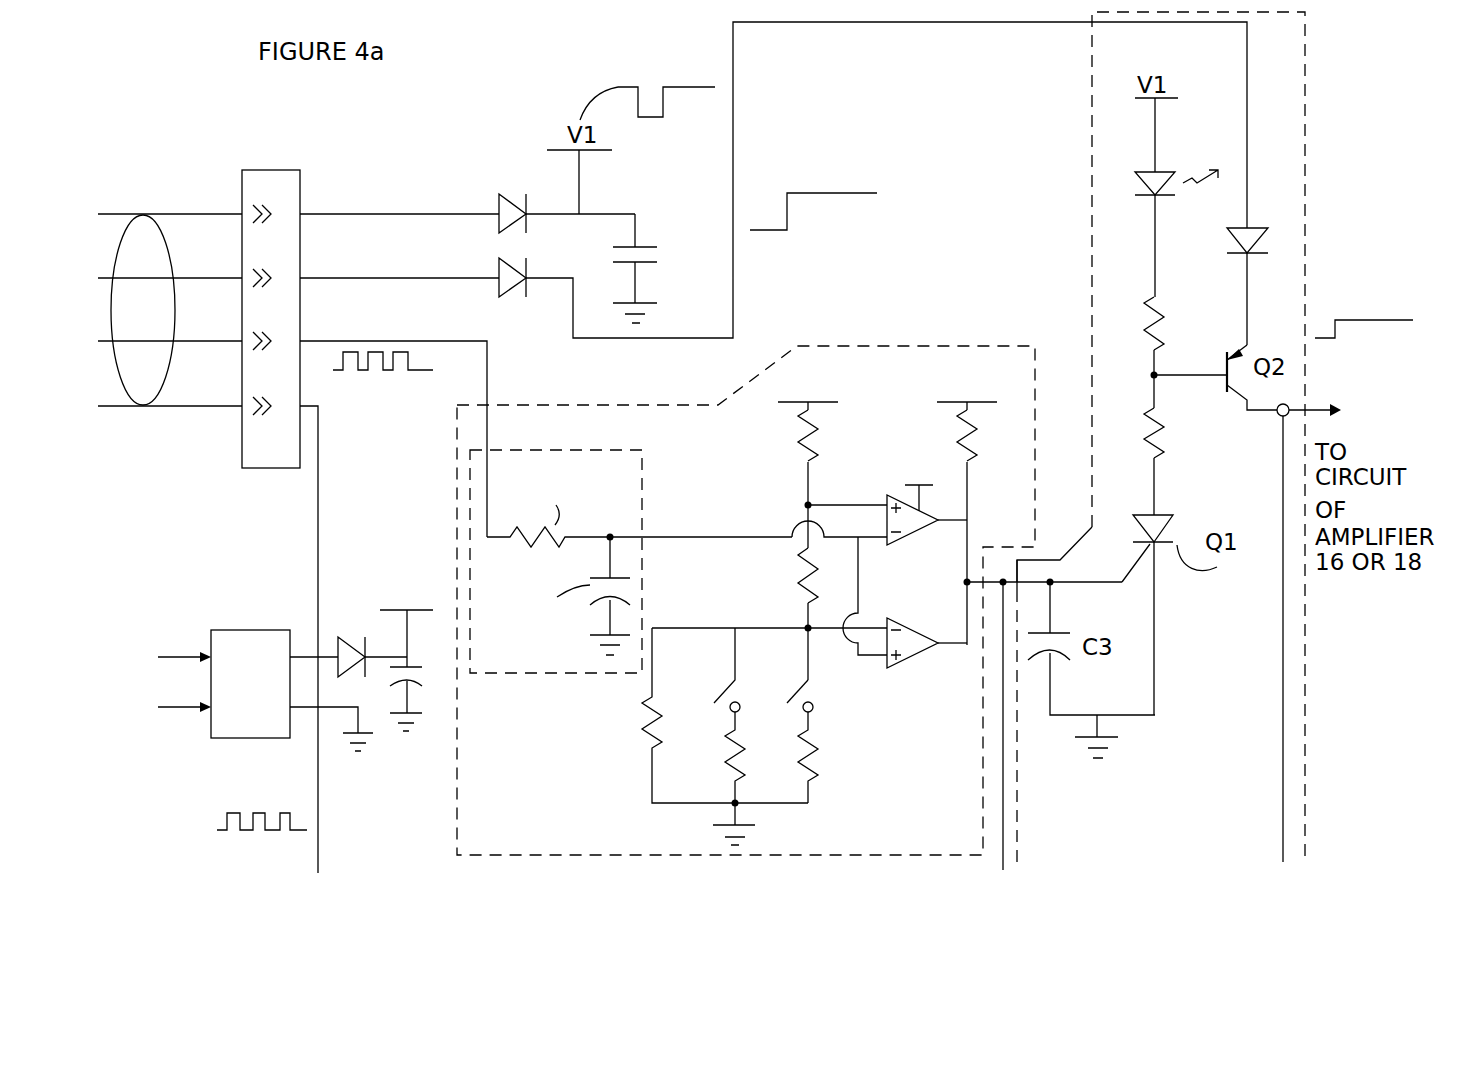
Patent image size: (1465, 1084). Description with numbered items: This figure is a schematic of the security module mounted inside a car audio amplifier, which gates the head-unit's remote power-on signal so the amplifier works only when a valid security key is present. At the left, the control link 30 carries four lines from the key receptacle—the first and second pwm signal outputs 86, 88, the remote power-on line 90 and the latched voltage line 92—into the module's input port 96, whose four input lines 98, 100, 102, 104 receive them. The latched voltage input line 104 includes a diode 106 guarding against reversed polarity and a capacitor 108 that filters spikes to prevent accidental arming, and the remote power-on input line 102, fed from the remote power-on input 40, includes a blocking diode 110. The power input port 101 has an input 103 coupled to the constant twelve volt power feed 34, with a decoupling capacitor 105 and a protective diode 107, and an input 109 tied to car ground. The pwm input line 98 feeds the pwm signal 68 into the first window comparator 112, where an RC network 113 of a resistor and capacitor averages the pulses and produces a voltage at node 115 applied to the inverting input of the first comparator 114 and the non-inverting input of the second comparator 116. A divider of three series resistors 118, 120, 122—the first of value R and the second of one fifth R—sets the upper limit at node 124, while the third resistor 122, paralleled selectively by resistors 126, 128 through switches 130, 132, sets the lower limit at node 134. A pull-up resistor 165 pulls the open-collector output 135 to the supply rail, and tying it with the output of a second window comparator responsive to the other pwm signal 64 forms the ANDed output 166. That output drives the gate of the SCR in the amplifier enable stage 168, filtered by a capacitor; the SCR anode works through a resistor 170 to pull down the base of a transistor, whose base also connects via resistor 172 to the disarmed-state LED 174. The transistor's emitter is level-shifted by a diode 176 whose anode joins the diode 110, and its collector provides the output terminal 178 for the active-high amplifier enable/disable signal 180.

The control link 30 is at (143, 215).
The latched voltage line 92 is at (177, 212).
The remote power-on line 90 is at (218, 277).
The pwm signal output 88 is at (210, 343).
The pwm signal output 86 is at (218, 408).
The input port 96 is at (293, 470).
The latched voltage input line 104 is at (322, 212).
The remote power-on input line 102 is at (318, 277).
The pwm input line 98 is at (343, 340).
The input line 100 is at (320, 470).
The pwm signal 68 is at (381, 368).
The diode 106 is at (498, 213).
The blocking diode 110 is at (498, 277).
The capacitor 108 is at (645, 247).
The remote power-on input 40 is at (808, 185).
The amplifier enable stage 168 is at (1307, 150).
The light emitting diode 174 is at (1161, 233).
The resistor 172 is at (1136, 327).
The resistor 170 is at (1133, 433).
The diode 176 is at (1220, 286).
The output terminal 178 is at (1277, 415).
The amplifier enable/disable signal 180 is at (1370, 333).
The ANDed output 166 is at (1010, 553).
The first window comparator 112 is at (452, 545).
The RC network 113 is at (645, 487).
The node 115 is at (606, 535).
The first resistor 118 is at (828, 441).
The node 124 is at (800, 505).
The second resistor 120 is at (797, 585).
The first comparator 114 is at (927, 522).
The second comparator 116 is at (913, 663).
The pull-up resistor 165 is at (968, 472).
The output 135 is at (991, 577).
The node 134 is at (800, 632).
The third resistor 122 is at (701, 715).
The switch 130 is at (712, 695).
The resistor 126 is at (710, 757).
The switch 132 is at (810, 685).
The resistor 128 is at (836, 757).
The power input port 101 is at (240, 630).
The constant +12 volt power feed 34 is at (150, 634).
The input 103 is at (310, 655).
The diode 107 is at (371, 638).
The capacitor 105 is at (427, 678).
The input 109 is at (303, 708).
The pwm signal 64 is at (222, 824).